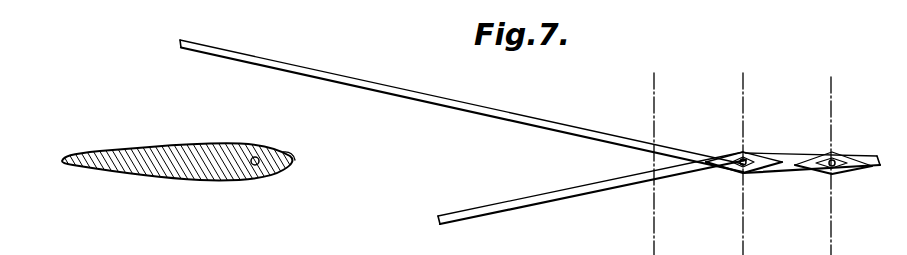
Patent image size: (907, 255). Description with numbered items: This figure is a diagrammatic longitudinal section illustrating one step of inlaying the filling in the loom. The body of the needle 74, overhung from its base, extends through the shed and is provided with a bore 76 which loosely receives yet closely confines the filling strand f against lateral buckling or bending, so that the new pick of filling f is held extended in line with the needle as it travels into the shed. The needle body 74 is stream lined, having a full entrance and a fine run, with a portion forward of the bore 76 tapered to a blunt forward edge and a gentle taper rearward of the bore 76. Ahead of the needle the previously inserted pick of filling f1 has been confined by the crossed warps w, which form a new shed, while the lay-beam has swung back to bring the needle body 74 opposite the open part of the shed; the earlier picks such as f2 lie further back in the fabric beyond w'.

The body of the needle 74 is at (171, 173).
The bore 76 is at (262, 160).
The filling strand f is at (254, 157).
The warps w is at (592, 188).
The wire w' is at (461, 106).
The pick of filling f1 is at (746, 158).
The hole in second strip f2 is at (835, 158).